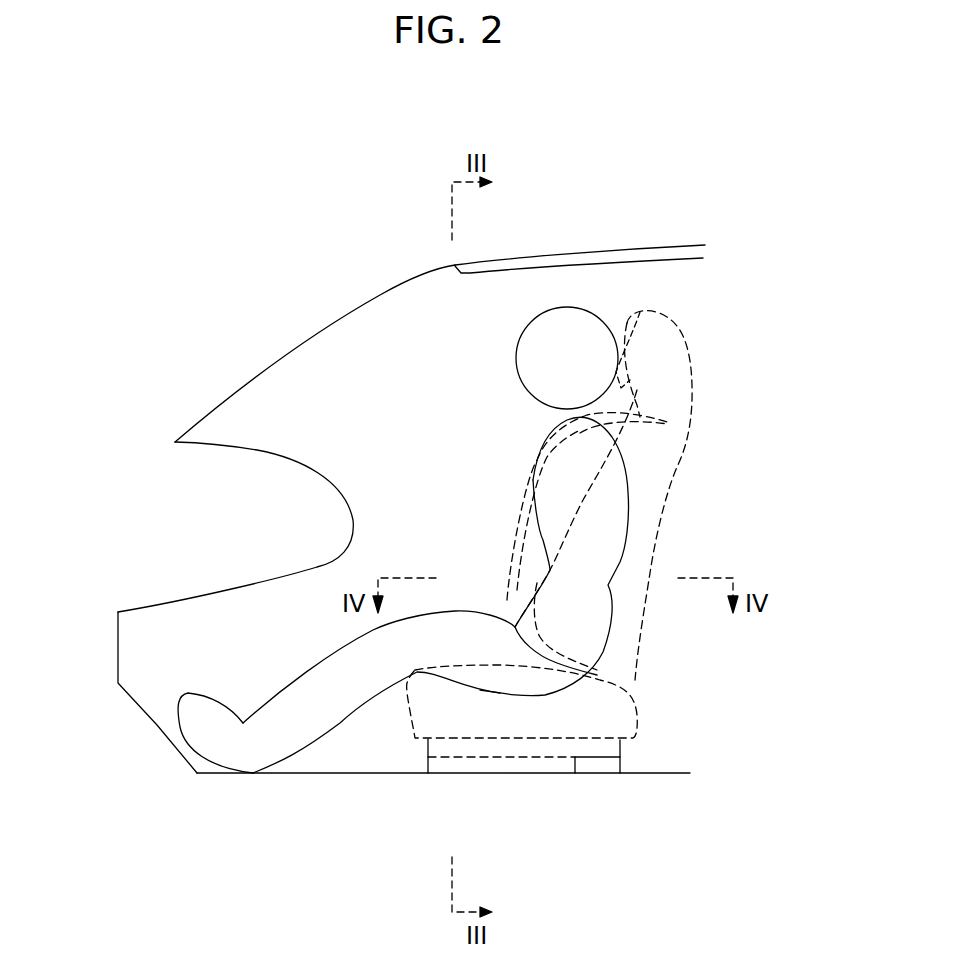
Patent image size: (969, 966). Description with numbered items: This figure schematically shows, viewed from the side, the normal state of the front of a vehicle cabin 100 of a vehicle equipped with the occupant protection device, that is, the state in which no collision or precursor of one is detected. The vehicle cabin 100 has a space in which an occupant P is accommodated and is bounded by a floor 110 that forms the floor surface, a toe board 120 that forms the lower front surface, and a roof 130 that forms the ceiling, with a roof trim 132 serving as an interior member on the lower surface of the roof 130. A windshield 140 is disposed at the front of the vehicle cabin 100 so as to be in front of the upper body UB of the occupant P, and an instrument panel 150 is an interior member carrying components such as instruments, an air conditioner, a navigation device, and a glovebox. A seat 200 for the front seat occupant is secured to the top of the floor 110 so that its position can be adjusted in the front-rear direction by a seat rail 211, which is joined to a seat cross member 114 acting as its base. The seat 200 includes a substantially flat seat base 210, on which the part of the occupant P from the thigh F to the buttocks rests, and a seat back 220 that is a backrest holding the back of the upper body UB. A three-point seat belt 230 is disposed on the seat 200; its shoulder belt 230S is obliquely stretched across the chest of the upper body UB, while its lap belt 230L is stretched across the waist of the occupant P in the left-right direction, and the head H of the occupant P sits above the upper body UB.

The vehicle cabin 100 is at (248, 230).
The floor 110 is at (253, 773).
The seat cross member 114 is at (472, 765).
The toe board 120 is at (157, 725).
The roof 130 is at (543, 258).
The roof trim 132 is at (510, 268).
The windshield 140 is at (295, 350).
The instrument panel 150 is at (257, 450).
The seat 200 is at (713, 283).
The seat base 210 is at (607, 740).
The seat rail 211 is at (552, 757).
The seat back 220 is at (657, 518).
The seat belt 230 is at (620, 378).
The shoulder belt 230S is at (580, 433).
The lap belt 230L is at (558, 653).
The occupant P is at (610, 288).
The head H is at (582, 313).
The upper body UB is at (628, 492).
The thigh F is at (437, 679).